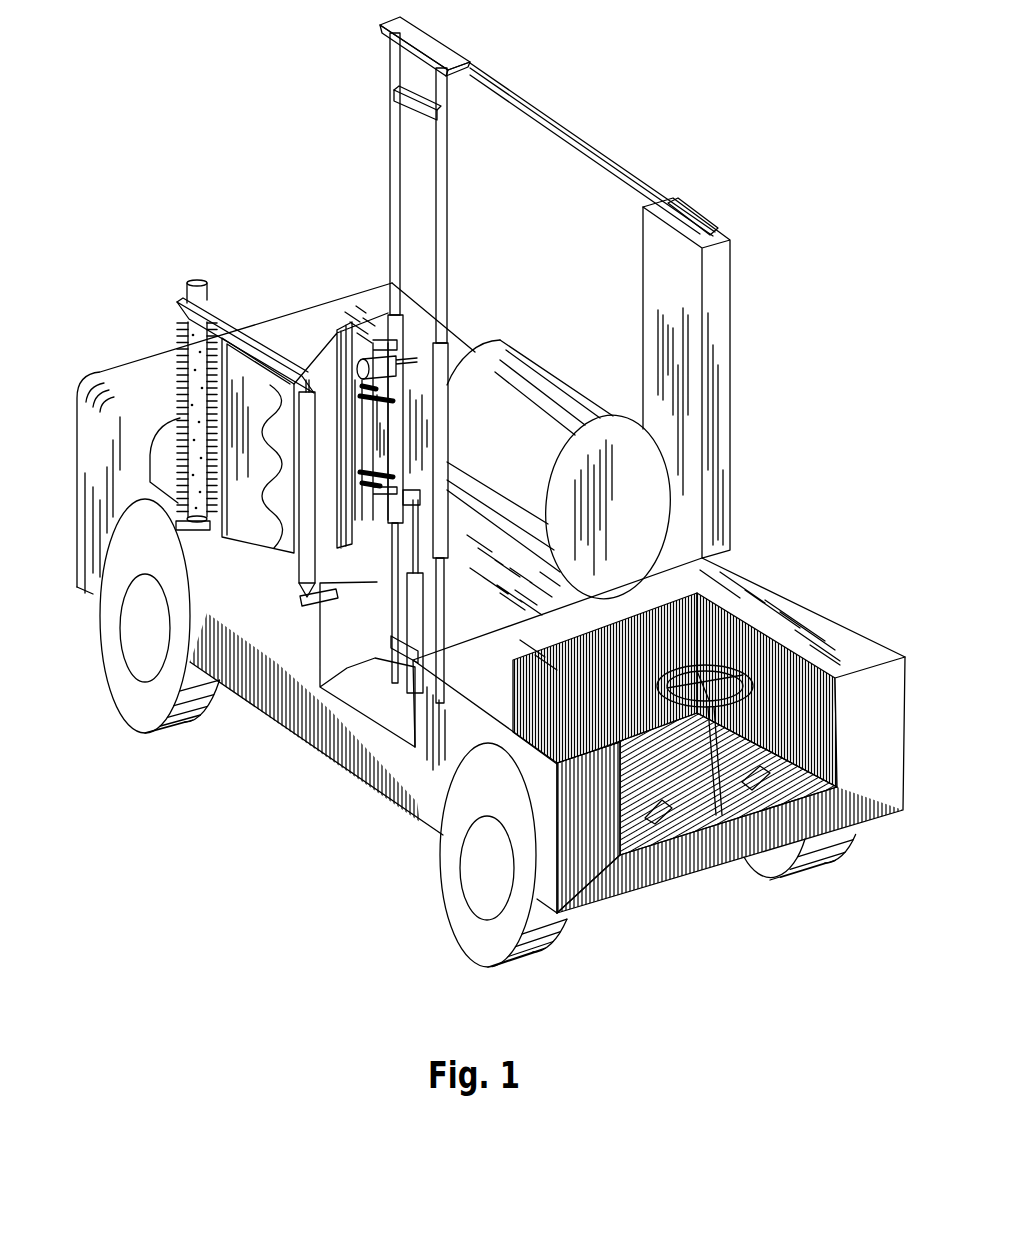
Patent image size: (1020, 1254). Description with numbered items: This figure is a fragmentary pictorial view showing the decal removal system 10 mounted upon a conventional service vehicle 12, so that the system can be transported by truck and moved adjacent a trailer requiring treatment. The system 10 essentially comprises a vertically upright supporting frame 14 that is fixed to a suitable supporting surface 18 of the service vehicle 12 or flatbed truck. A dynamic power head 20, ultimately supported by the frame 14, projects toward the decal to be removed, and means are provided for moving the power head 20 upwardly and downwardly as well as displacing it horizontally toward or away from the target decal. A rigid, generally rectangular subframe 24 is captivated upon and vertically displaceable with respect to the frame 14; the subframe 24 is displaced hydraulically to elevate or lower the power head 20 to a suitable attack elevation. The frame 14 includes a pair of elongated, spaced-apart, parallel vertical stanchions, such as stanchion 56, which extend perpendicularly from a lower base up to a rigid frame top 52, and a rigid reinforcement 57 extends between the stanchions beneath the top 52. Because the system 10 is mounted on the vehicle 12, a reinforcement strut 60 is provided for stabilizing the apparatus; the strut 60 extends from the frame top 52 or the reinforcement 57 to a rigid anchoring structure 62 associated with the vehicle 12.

The decal removal system 10 is at (257, 295).
The service vehicle 12 is at (747, 565).
The supporting frame 14 is at (449, 604).
The supporting surface 18 is at (343, 685).
The dynamic power head 20 is at (170, 388).
The subframe 24 is at (457, 430).
The frame top 52 is at (430, 44).
The stanchion 56 is at (442, 213).
The reinforcement 57 is at (410, 116).
The reinforcement strut 60 is at (565, 138).
The anchoring structure 62 is at (718, 276).